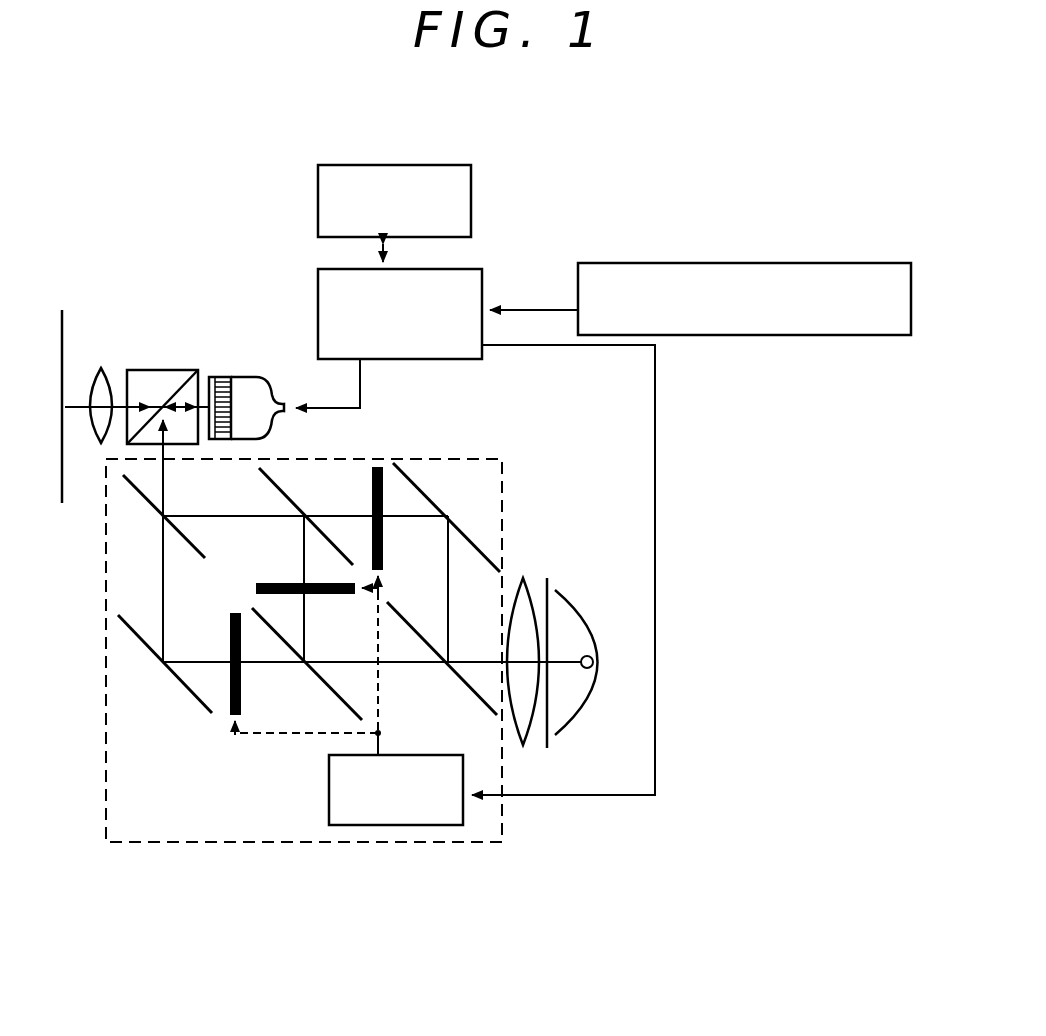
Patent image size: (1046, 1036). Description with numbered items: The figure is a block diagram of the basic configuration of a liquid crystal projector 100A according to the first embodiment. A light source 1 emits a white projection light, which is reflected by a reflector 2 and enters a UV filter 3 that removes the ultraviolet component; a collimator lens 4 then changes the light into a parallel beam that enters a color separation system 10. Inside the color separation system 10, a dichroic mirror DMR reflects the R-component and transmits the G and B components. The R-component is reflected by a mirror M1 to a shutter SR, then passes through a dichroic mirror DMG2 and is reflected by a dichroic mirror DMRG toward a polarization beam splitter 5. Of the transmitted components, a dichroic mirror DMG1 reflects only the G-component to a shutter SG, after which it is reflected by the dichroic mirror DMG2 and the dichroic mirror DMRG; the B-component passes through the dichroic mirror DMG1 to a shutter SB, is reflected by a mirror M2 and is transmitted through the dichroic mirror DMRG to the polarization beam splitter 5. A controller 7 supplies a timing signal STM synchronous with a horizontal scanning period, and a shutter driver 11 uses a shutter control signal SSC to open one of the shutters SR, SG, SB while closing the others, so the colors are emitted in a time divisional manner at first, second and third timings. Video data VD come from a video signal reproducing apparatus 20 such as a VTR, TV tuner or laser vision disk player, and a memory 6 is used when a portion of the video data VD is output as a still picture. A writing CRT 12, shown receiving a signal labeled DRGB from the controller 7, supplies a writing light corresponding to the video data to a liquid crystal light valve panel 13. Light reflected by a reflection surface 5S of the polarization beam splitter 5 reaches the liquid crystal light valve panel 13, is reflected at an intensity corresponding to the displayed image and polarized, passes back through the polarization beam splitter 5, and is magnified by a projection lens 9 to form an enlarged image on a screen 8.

The liquid crystal projector 100A is at (215, 118).
The light source 1 is at (591, 668).
The reflector 2 is at (604, 622).
The UV filter 3 is at (547, 578).
The collimator lens 4 is at (526, 578).
The polarization beam splitter 5 is at (150, 370).
The reflection surface 5S is at (183, 388).
The memory 6 is at (415, 164).
The controller 7 is at (435, 268).
The screen 8 is at (65, 305).
The projection lens 9 is at (100, 366).
The color separation system 10 is at (335, 842).
The shutter driver 11 is at (463, 825).
The writing CRT 12 is at (262, 377).
The liquid crystal light valve panel 13 is at (222, 377).
The video signal reproducing apparatus 20 is at (767, 263).
The mirror M1 is at (428, 493).
The mirror M2 is at (138, 640).
The dichroic mirror DMG1 is at (337, 693).
The dichroic mirror DMG2 is at (286, 493).
The dichroic mirror DMRG is at (195, 546).
The dichroic mirror DMR is at (487, 700).
The shutter SR is at (384, 540).
The shutter SG is at (330, 595).
The shutter SB is at (230, 648).
The shutter control signal SSC is at (382, 710).
The timing signal STM is at (657, 520).
The video data VD is at (510, 310).
The RGB display data DRGB is at (362, 402).